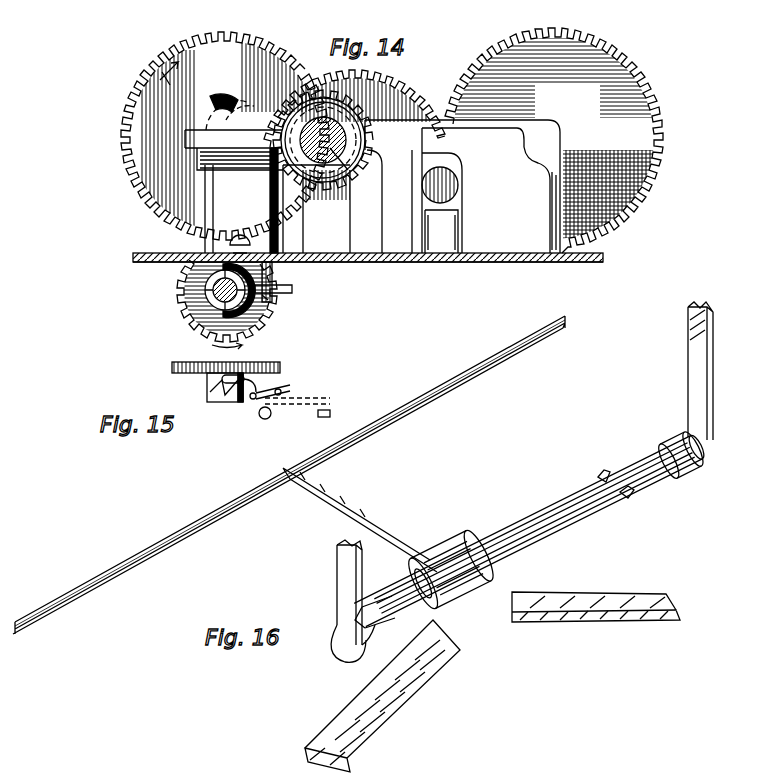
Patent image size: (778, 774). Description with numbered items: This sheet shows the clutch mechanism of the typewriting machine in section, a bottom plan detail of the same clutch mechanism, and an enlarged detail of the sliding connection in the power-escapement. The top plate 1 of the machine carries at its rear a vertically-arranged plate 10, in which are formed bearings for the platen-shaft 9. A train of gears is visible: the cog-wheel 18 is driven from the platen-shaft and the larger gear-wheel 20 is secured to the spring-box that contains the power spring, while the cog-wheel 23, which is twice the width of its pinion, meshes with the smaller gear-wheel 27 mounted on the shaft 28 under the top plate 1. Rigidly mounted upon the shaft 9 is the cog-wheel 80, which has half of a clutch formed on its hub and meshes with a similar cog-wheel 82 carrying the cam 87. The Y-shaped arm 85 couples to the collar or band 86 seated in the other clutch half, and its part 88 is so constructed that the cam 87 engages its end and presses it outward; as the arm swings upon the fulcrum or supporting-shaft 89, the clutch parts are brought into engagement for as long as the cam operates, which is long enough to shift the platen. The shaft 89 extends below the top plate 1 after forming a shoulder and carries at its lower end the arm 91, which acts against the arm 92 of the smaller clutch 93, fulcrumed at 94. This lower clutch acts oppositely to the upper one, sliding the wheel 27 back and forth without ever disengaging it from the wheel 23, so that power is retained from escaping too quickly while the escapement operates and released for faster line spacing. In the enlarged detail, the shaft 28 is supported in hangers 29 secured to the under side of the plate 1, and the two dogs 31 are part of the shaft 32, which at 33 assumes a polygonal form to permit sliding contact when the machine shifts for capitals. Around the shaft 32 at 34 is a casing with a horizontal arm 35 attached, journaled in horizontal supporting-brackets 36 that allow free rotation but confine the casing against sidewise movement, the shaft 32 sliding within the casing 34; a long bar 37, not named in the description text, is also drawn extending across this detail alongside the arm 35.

In FIG. 14, the top plate 1 is at (383, 263).
In FIG. 14, the platen-shaft 9 is at (356, 182).
In FIG. 14, the vertically-arranged plate 10 is at (489, 190).
In FIG. 14, the cog-wheel 18 is at (406, 78).
In FIG. 14, the gear-wheel 20 is at (554, 140).
In FIG. 14, the cog-wheel 23 is at (225, 136).
In FIG. 14, the gear-wheel 27 is at (182, 306).
In FIG. 14, the shaft 28 is at (221, 293).
In FIG. 14, the cog-wheel 80 is at (330, 94).
In FIG. 14, the cog-wheel 82 is at (212, 96).
In FIG. 14, the Y-shaped arm 85 is at (318, 190).
In FIG. 14, the collar or band 86 is at (376, 141).
In FIG. 14, the cam 87 is at (240, 107).
In FIG. 14, the part of the Y-shaped arm 88 is at (234, 149).
In FIG. 14, the fulcrum or supporting-shaft 89 is at (290, 272).
In FIG. 15, the fulcrum or supporting-shaft 89 is at (270, 416).
In FIG. 14, the arm 91 is at (284, 286).
In FIG. 15, the arm 91 is at (280, 390).
In FIG. 15, the arm 92 is at (290, 398).
In FIG. 14, the smaller clutch 93 is at (184, 292).
In FIG. 15, the smaller clutch 93 is at (225, 397).
In FIG. 14, the fulcrum 94 is at (275, 300).
In FIG. 15, the fulcrum 94 is at (253, 400).
In FIG. 16, the hangers 29 is at (336, 590).
In FIG. 16, the dogs 31 is at (602, 478).
In FIG. 16, the shaft 32 is at (551, 518).
In FIG. 16, the polygonal portion of shaft 33 is at (382, 602).
In FIG. 16, the casing 34 is at (460, 548).
In FIG. 16, the horizontal arm 35 is at (380, 520).
In FIG. 16, the horizontal supporting-brackets 36 is at (572, 598).
In FIG. 16, the bar 37 is at (398, 408).